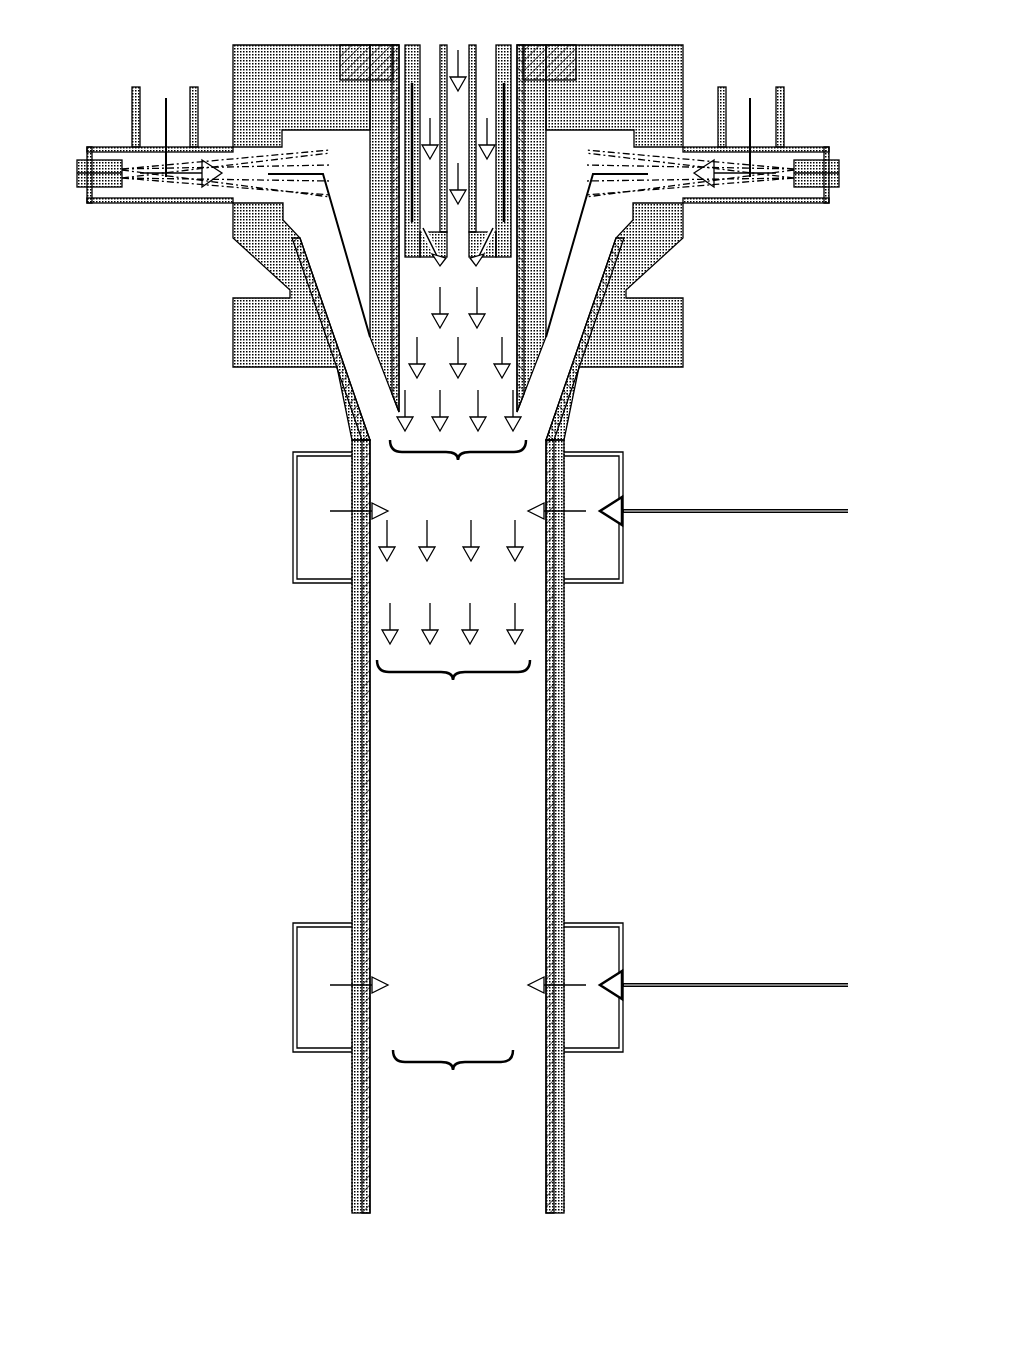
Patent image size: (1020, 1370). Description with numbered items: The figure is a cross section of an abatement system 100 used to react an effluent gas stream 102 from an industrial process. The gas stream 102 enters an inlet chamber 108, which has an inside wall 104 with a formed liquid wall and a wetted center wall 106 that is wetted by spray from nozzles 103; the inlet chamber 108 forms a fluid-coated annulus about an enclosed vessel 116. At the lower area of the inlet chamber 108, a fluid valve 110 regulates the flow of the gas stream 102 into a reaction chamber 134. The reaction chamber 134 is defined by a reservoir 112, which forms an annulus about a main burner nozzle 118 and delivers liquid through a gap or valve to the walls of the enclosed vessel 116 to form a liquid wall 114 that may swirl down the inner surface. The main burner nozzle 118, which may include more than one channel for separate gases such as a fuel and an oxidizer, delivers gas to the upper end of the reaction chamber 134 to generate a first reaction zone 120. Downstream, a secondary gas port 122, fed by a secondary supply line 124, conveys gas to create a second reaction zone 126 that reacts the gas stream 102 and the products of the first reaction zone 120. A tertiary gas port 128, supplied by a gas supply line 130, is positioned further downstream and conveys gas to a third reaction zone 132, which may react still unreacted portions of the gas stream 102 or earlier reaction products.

The abatement system 100 is at (163, 1037).
The gas stream 102 is at (458, 132).
The nozzles 103 is at (82, 190).
The inside wall 104 is at (298, 240).
The wetted center wall 106 is at (547, 163).
The inlet chamber 108 is at (292, 380).
The fluid valve 110 is at (398, 412).
The reservoir 112 is at (349, 43).
The liquid wall 114 is at (370, 775).
The enclosed vessel 116 is at (352, 803).
The main burner nozzle 118 is at (458, 278).
The first reaction zone 120 is at (458, 408).
The secondary gas port 122 is at (458, 517).
The secondary supply line 124 is at (706, 505).
The second reaction zone 126 is at (453, 611).
The tertiary gas port 128 is at (458, 987).
The gas supply line 130 is at (722, 988).
The third reaction zone 132 is at (453, 1072).
The reaction chamber 134 is at (509, 1120).